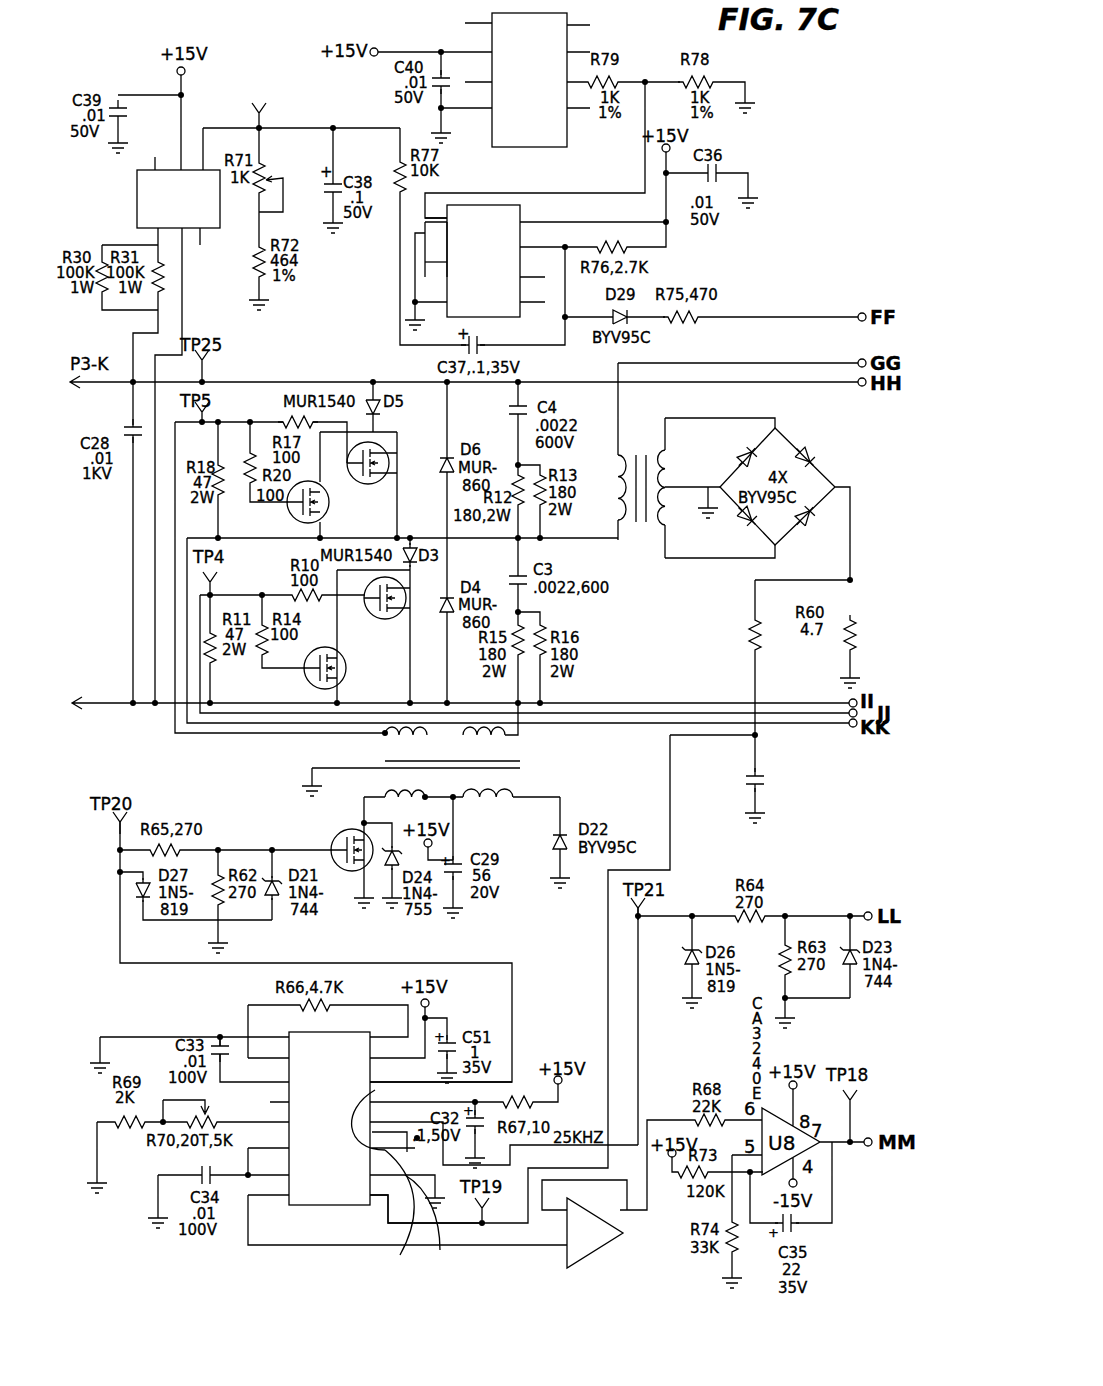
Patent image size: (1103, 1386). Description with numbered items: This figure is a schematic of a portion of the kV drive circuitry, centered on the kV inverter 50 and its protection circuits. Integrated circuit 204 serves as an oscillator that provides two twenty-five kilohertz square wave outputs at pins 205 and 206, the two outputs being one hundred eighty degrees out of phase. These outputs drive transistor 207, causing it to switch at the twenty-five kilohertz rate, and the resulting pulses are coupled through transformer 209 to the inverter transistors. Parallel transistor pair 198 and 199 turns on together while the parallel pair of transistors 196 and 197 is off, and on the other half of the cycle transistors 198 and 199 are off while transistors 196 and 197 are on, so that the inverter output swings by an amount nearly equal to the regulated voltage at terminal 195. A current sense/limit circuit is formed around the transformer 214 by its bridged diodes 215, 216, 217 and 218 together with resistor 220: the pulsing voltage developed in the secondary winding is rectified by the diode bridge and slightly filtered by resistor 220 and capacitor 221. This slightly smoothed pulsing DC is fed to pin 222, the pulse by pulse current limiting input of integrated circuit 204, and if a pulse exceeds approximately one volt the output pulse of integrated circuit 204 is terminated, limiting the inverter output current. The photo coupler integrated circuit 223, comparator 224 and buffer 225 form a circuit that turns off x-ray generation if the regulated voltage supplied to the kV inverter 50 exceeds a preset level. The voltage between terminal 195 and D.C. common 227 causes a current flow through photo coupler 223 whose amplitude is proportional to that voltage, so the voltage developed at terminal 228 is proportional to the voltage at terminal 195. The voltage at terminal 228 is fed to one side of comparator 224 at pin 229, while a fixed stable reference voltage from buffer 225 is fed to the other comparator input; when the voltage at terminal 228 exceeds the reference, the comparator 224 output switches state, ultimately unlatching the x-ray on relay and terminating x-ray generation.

The kV inverter 50 is at (515, 1263).
The terminal 195 is at (130, 334).
The transistor 196 is at (370, 608).
The transistor 197 is at (303, 682).
The transistor 198 is at (387, 452).
The transistor 199 is at (290, 512).
The integrated circuit 204 is at (307, 1205).
The pin 205 is at (430, 1227).
The pin 206 is at (425, 1147).
The transistor 207 is at (339, 886).
The transformer 209 is at (460, 761).
The transformer T2 214 is at (650, 425).
The diode 215 is at (737, 435).
The diode 216 is at (815, 435).
The diode 217 is at (792, 558).
The diode 218 is at (708, 558).
The resistor 220 is at (764, 644).
The capacitor 221 is at (735, 802).
The pin 222 is at (373, 1208).
The photo coupler integrated circuit 223 is at (137, 190).
The comparator 224 is at (490, 205).
The buffer 225 is at (558, 147).
The D.C. common 227 is at (92, 695).
The terminal 228 is at (260, 78).
The pin 229 is at (447, 262).